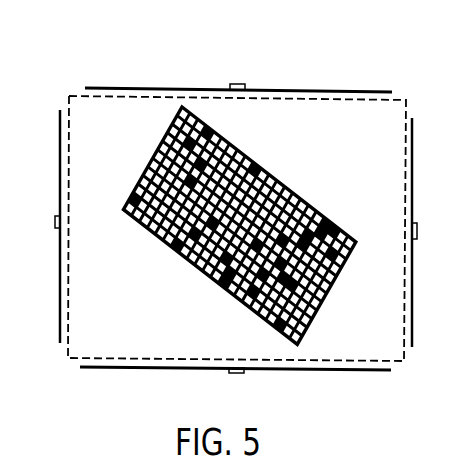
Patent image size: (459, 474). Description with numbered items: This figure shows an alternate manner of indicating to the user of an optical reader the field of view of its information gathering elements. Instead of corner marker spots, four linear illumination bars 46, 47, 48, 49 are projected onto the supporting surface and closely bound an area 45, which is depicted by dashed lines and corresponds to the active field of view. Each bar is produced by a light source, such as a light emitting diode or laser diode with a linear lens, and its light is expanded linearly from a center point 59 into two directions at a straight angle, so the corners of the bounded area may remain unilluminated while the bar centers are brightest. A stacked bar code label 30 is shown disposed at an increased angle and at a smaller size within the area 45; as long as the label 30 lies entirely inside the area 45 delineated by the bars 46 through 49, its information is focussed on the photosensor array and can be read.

The stacked bar code label 30 is at (196, 115).
The area 45 is at (272, 112).
The linear illumination bar 46 is at (302, 371).
The linear illumination bar 47 is at (57, 265).
The linear illumination bar 48 is at (103, 86).
The linear illumination bar 49 is at (412, 278).
The center point 59 is at (238, 84).